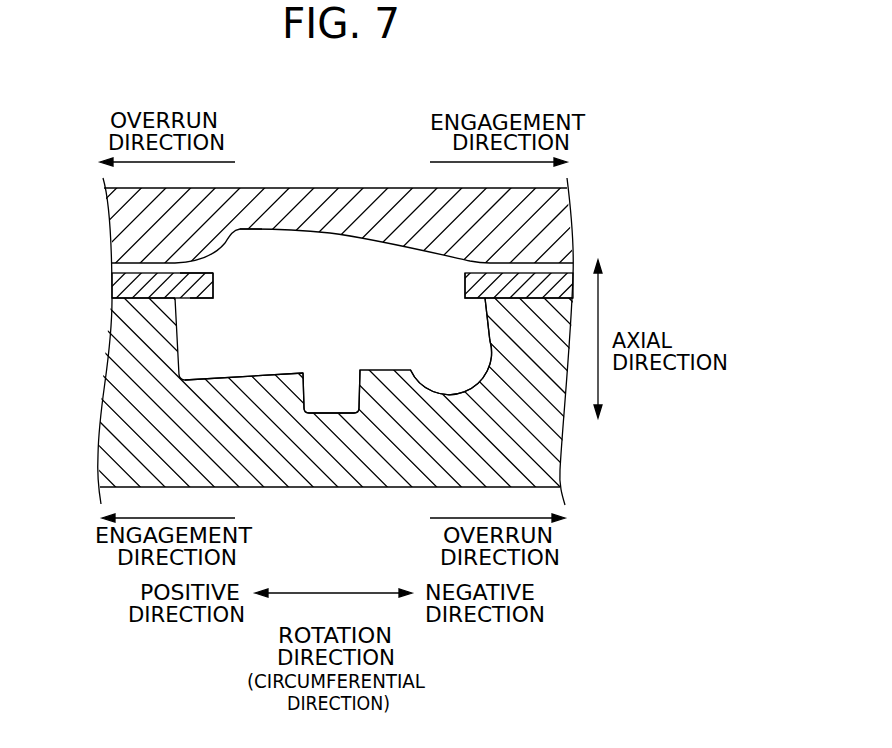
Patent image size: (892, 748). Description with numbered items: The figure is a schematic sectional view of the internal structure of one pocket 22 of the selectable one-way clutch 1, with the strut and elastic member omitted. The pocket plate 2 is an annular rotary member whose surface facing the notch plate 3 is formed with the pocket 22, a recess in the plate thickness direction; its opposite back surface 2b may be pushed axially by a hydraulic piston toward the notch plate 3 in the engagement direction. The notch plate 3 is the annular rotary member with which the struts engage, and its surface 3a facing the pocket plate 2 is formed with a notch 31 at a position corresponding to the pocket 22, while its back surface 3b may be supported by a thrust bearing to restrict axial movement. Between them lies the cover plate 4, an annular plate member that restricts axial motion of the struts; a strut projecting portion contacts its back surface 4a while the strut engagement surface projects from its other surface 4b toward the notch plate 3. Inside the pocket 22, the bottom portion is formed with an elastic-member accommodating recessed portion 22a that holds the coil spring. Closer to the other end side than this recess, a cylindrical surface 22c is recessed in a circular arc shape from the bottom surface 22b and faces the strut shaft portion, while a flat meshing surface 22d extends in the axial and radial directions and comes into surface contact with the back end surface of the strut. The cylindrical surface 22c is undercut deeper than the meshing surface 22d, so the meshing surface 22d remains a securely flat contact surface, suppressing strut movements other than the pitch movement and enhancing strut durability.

The selectable one-way clutch (SOWC) 1 is at (372, 160).
The pocket plate 2 is at (397, 403).
The back surface of pocket plate 2b is at (340, 488).
The notch plate 3 is at (338, 219).
The surface of notch plate 3a is at (412, 250).
The back surface of notch plate 3b is at (312, 188).
The cover plate 4 is at (325, 309).
The back surface of cover plate 4a is at (203, 299).
The other surface of cover plate 4b is at (210, 273).
The pocket 22 is at (318, 323).
The elastic-member accommodating recessed portion 22a is at (330, 413).
The bottom surface of pocket 22b is at (242, 377).
The cylindrical surface 22c is at (453, 394).
The meshing surface 22d is at (485, 315).
The notch 31 is at (260, 235).